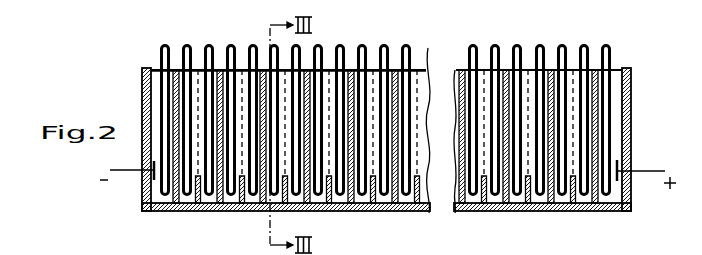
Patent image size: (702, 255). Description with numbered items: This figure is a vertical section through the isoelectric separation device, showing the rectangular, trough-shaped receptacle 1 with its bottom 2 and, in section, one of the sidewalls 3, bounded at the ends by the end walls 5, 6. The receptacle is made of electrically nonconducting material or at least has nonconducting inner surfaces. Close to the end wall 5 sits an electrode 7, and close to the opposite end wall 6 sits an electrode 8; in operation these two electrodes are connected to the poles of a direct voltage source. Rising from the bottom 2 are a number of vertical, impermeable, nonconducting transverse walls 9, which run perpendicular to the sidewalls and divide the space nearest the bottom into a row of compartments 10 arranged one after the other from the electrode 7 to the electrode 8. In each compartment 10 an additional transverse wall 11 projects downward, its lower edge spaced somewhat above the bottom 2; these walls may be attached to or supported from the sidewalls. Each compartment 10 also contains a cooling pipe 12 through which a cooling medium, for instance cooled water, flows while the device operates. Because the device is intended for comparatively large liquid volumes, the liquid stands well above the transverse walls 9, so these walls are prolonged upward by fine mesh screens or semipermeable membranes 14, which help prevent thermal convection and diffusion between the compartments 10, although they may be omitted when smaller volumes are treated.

The receptacle 1 is at (609, 70).
The bottom 2 is at (342, 196).
The sidewall 3 is at (346, 63).
The end wall 5 is at (135, 146).
The end wall 6 is at (626, 130).
The electrode 7 is at (136, 176).
The electrode 8 is at (625, 178).
The transverse wall 9 is at (189, 203).
The compartment 10 is at (214, 203).
The additional transverse wall 11 is at (250, 38).
The cooling pipe 12 is at (203, 37).
The semipermeable membrane 14 is at (305, 62).